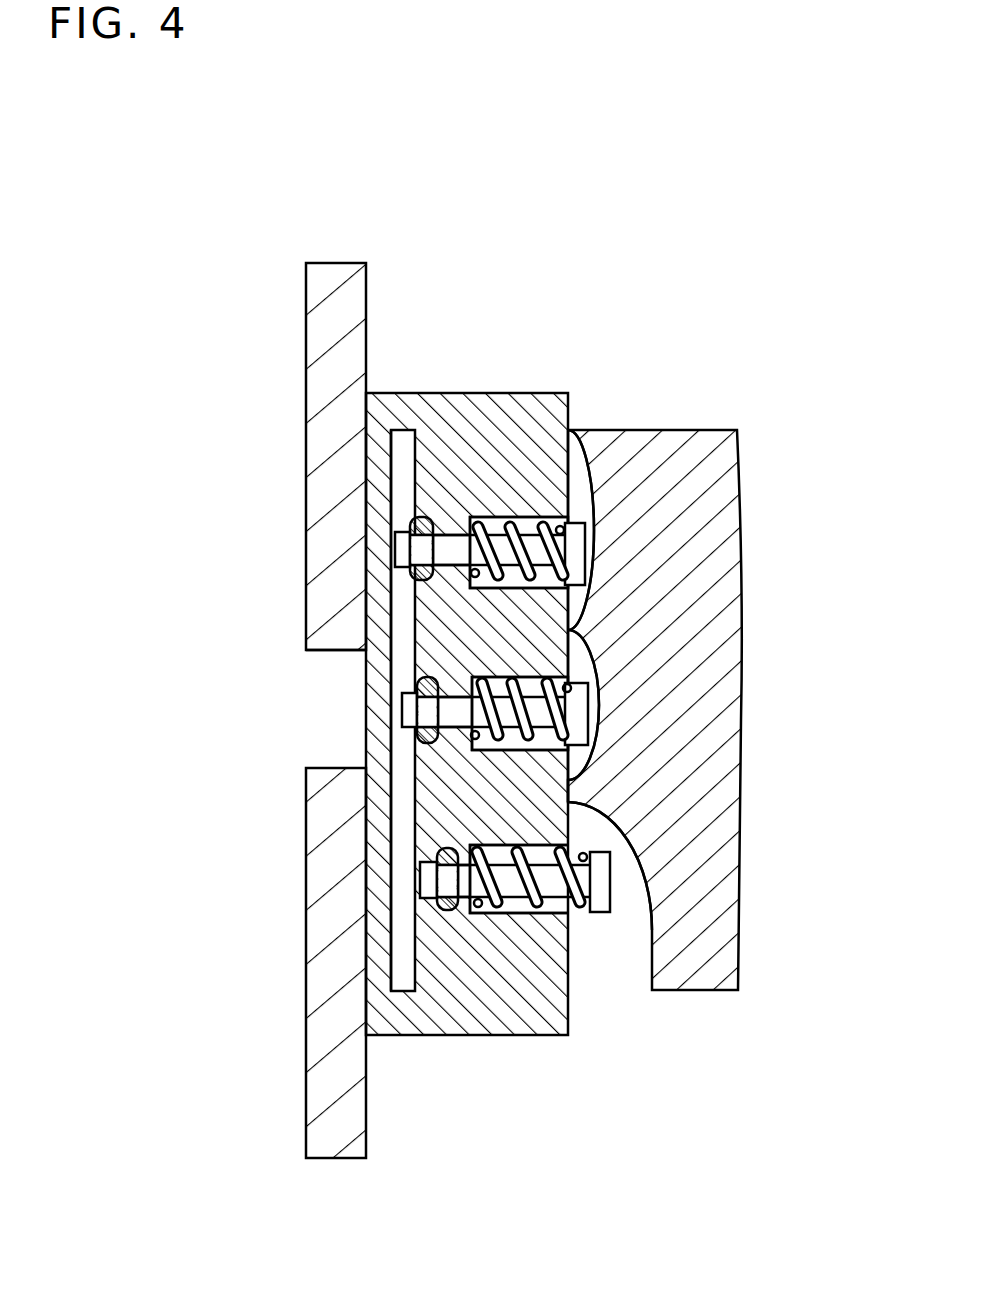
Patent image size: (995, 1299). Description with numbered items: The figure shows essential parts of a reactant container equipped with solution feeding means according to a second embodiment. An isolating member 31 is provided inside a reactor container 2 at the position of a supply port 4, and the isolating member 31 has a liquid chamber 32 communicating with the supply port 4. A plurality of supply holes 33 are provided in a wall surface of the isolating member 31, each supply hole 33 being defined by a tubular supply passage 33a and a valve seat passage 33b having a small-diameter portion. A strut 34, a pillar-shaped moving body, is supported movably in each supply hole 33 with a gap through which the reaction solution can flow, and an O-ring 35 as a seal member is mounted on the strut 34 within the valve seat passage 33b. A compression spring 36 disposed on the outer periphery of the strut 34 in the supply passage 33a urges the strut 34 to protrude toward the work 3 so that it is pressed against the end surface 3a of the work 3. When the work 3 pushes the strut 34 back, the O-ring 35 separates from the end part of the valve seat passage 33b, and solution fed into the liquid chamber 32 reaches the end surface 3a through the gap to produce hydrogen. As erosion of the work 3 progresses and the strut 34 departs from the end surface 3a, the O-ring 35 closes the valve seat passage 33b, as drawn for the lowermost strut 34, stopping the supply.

The reactor container 2 is at (318, 338).
The work 3 is at (725, 478).
The end surface 3a is at (648, 432).
The supply port 4 is at (333, 650).
The isolating member 31 is at (568, 347).
The liquid chamber 32 is at (396, 801).
The supply hole 33 is at (527, 510).
The supply passage 33a is at (468, 517).
The valve seat passage 33b is at (428, 512).
The strut 34 is at (577, 552).
The O-ring 35 is at (413, 530).
The compression spring 36 is at (587, 485).